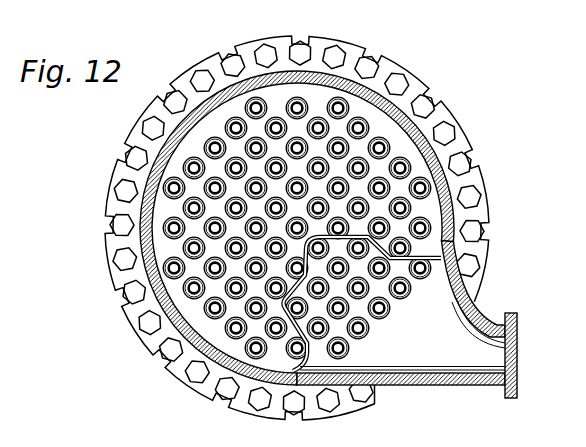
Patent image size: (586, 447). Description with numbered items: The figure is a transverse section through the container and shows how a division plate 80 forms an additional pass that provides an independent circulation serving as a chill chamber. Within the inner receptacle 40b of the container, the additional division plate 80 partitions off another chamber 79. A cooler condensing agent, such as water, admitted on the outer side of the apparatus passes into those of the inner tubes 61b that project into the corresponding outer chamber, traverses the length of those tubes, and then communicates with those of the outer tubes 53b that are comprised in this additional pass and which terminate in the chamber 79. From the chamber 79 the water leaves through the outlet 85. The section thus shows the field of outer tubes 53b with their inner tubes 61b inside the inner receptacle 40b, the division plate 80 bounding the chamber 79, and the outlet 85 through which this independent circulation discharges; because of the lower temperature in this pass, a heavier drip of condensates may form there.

The inner receptacle 40b is at (208, 326).
The outer tubes 53b is at (363, 118).
The inner tubes 61b is at (370, 126).
The chamber 79 is at (405, 352).
The division plate 80 is at (441, 258).
The outlet 85 is at (508, 357).